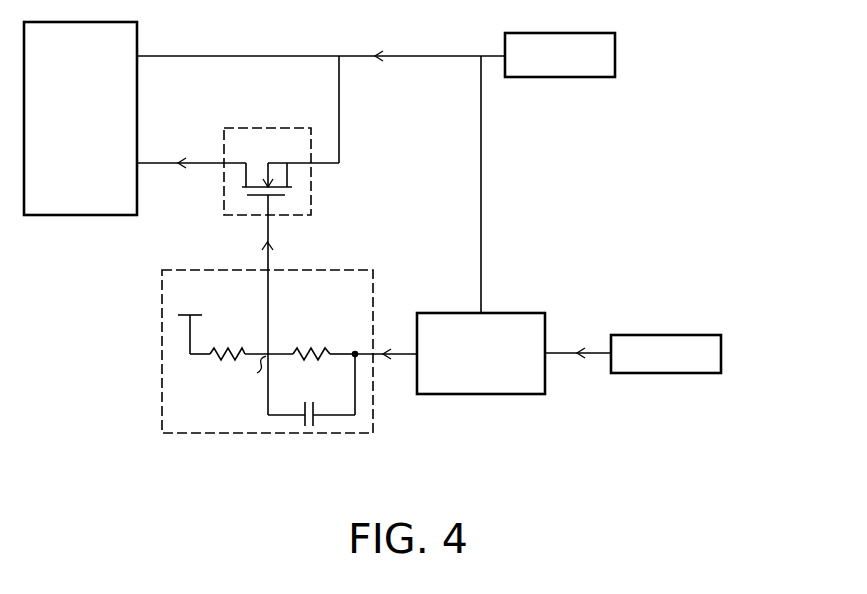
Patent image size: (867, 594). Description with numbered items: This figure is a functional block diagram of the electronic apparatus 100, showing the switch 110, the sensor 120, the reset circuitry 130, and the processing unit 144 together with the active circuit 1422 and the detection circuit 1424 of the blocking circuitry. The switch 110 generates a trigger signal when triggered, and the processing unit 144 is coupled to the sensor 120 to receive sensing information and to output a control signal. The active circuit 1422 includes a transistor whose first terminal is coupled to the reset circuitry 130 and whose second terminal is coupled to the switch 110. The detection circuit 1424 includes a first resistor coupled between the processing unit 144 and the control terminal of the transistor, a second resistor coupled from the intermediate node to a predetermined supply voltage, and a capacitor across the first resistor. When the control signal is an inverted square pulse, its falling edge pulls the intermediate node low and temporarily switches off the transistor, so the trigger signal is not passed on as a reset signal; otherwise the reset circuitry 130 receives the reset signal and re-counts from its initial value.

The electronic apparatus 100 is at (752, 468).
The switch 110 is at (617, 53).
The sensor 120 is at (723, 355).
The reset circuitry 130 is at (139, 100).
The processing unit 144 is at (525, 396).
The active circuit 1422 is at (313, 198).
The detection circuit 1424 is at (375, 276).